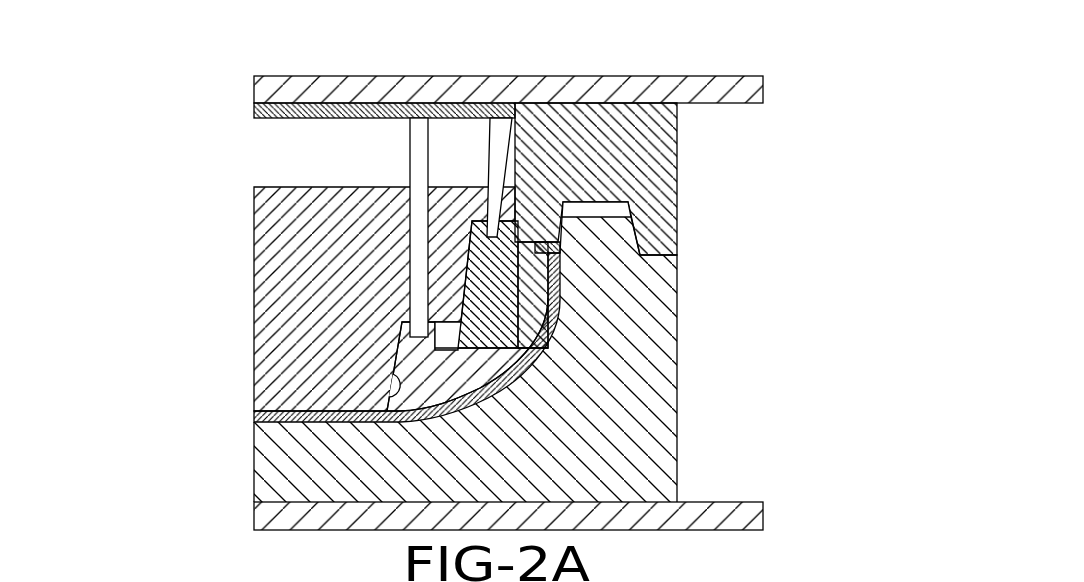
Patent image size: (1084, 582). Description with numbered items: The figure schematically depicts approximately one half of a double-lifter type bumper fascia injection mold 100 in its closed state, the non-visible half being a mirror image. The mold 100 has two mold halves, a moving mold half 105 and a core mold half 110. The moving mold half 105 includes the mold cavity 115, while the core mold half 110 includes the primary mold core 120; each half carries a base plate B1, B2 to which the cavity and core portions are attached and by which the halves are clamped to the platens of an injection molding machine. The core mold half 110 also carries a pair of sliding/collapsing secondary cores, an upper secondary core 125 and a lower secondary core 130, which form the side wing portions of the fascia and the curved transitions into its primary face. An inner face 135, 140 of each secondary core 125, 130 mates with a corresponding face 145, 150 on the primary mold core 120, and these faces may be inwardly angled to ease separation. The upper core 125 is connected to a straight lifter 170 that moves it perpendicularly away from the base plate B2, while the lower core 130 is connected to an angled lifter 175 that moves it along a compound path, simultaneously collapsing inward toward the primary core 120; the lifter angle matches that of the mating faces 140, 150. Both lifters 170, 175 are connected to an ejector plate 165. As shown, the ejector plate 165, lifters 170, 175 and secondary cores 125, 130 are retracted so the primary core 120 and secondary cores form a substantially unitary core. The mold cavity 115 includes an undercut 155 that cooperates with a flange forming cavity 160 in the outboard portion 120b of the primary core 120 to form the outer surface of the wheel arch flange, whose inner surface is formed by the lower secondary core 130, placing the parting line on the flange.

The bumper fascia injection mold 100 is at (501, 297).
The moving mold half 105 is at (523, 359).
The core mold half 110 is at (522, 215).
The mold cavity 115 is at (328, 447).
The primary mold core 120 is at (320, 284).
The outboard portion of the primary mold core 120b is at (655, 207).
The upper secondary core 125 is at (453, 368).
The lower secondary core 130 is at (520, 315).
The inner face of the upper secondary core 135 is at (397, 355).
The inner face of the lower secondary core 140 is at (467, 262).
The mating face of the primary mold core 145 is at (388, 394).
The mating face of the primary mold core 150 is at (465, 295).
The undercut 155 is at (531, 350).
The flange forming cavity 160 is at (550, 246).
The ejector plate 165 is at (294, 112).
The straight lifter 170 is at (420, 153).
The angled lifter 175 is at (501, 128).
The base plate B1 is at (685, 531).
The base plate B2 is at (675, 76).